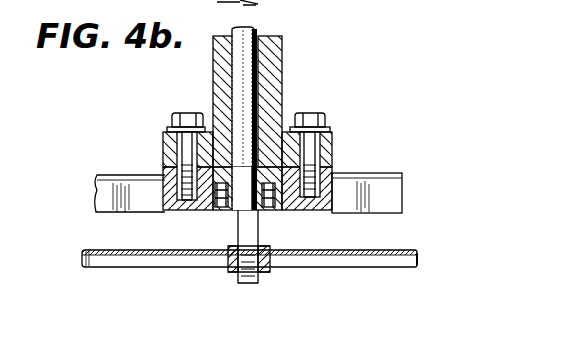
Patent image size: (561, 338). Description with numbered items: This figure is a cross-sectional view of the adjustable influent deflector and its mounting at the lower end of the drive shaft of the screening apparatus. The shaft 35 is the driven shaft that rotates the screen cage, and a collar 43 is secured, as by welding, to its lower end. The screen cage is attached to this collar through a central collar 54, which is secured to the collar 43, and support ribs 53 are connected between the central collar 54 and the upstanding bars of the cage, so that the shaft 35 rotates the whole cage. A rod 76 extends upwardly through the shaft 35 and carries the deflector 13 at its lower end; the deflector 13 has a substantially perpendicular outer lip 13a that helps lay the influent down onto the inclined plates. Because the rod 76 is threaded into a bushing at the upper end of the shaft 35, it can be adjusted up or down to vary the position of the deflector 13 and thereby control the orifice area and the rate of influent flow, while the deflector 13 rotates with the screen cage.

The influent deflector 13 is at (387, 247).
The outer lip 13a is at (417, 265).
The shaft 35 is at (270, 91).
The collar 43 is at (323, 150).
The support ribs 53 is at (132, 190).
The central collar 54 is at (293, 203).
The rod 76 is at (247, 227).